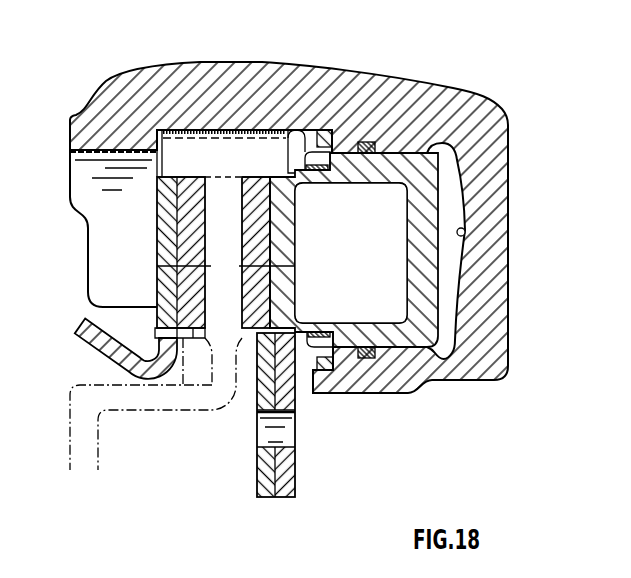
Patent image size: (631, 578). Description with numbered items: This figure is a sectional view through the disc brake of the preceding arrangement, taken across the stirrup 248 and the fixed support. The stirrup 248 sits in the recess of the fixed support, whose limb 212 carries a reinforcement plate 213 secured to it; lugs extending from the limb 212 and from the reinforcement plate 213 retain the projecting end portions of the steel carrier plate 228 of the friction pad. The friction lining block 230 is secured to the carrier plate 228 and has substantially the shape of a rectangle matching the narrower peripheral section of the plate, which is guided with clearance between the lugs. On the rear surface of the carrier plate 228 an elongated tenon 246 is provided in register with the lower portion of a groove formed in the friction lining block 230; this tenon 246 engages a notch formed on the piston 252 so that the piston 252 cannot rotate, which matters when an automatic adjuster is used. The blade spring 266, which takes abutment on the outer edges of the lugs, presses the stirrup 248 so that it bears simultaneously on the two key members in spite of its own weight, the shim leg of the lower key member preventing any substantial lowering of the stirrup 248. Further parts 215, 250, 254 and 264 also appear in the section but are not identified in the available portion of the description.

The limb 212 is at (284, 477).
The reinforcement plate 213 is at (268, 473).
The hooked flange 215 is at (98, 349).
The carrier plate 228 is at (225, 257).
The friction lining block 230 is at (248, 296).
The elongated tenon 246 is at (351, 253).
The stirrup 248 is at (293, 62).
The groove 250 is at (462, 230).
The piston 252 is at (425, 260).
The sealing ring 254 is at (366, 142).
The sleeve 264 is at (110, 238).
The blade spring 266 is at (177, 129).